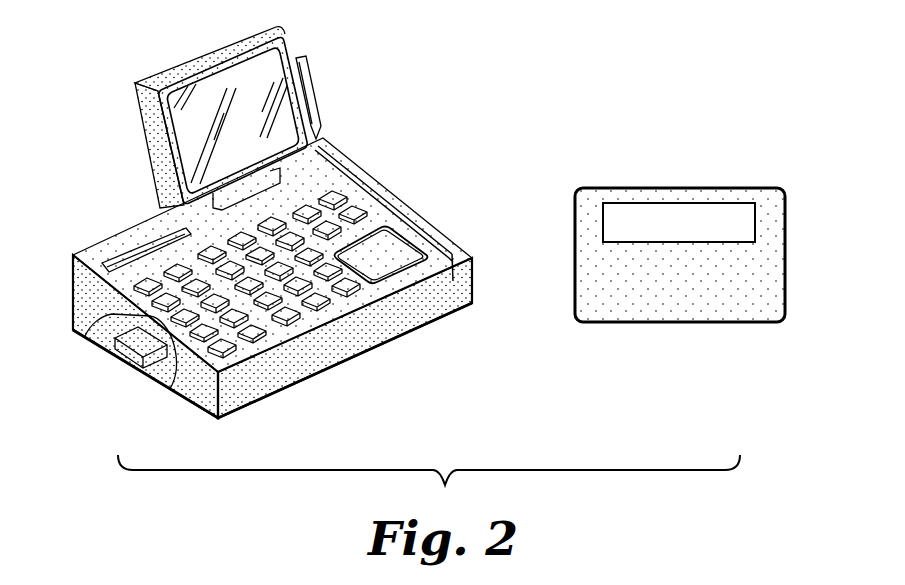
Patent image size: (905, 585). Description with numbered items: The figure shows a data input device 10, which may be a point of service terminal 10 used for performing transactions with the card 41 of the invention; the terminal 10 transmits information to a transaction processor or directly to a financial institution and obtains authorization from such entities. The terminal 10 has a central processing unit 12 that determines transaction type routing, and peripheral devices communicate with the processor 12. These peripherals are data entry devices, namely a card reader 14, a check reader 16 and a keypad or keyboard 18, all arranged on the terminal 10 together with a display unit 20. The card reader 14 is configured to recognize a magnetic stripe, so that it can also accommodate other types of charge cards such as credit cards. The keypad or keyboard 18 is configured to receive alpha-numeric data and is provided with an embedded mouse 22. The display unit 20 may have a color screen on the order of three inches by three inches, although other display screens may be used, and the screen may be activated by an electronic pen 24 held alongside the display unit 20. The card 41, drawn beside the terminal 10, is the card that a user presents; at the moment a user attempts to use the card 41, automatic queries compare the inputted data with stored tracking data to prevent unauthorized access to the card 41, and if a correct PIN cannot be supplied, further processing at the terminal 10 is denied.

The data input device 10 is at (418, 332).
The central processing unit 12 is at (137, 357).
The card reader 14 is at (425, 241).
The check reader 16 is at (140, 253).
The keypad or keyboard 18 is at (329, 303).
The display unit 20 is at (170, 124).
The embedded mouse 22 is at (388, 228).
The electronic pen 24 is at (312, 95).
The card 41 is at (790, 258).